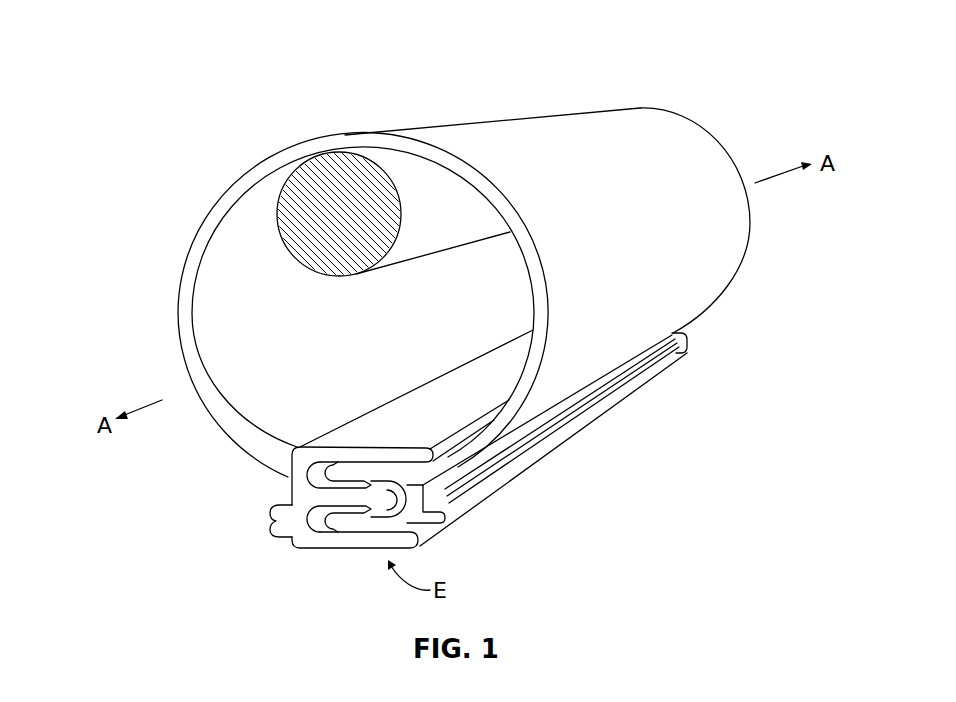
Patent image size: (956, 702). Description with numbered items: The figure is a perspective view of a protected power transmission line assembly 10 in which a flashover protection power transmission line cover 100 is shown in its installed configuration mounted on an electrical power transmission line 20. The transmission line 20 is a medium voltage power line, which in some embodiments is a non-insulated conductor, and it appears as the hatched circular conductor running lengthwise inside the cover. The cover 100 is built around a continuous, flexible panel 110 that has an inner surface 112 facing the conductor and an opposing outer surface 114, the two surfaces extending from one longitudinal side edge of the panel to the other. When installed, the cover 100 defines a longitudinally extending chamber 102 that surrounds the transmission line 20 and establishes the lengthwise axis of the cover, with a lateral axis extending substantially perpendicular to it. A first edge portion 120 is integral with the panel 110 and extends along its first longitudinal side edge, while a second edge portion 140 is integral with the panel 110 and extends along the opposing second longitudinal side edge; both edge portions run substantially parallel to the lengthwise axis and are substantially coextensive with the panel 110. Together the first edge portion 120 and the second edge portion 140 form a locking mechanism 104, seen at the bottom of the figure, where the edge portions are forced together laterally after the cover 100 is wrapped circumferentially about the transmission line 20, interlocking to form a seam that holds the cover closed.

The protected power transmission line assembly 10 is at (236, 64).
The electrical power transmission line 20 is at (366, 180).
The power transmission line cover 100 is at (479, 66).
The longitudinally extending chamber 102 is at (262, 323).
The locking mechanism 104 is at (349, 531).
The continuous, flexible panel 110 is at (527, 108).
The inner surface 112 is at (228, 247).
The outer surface 114 is at (610, 350).
The first edge portion 120 is at (277, 535).
The second edge portion 140 is at (469, 510).